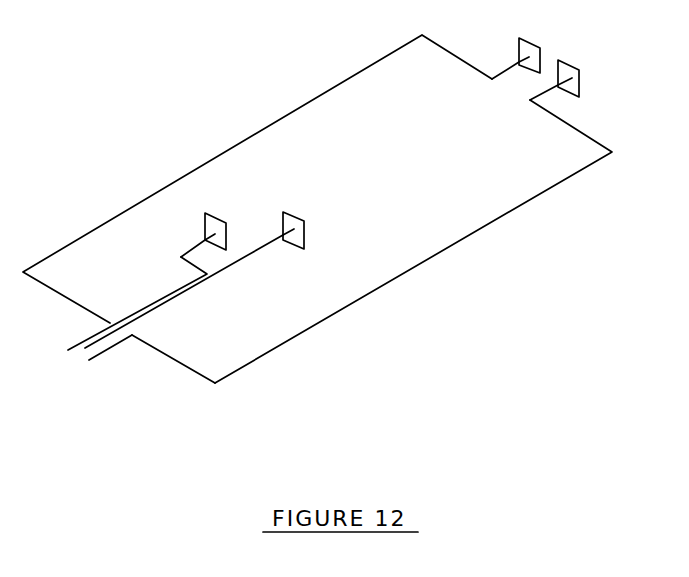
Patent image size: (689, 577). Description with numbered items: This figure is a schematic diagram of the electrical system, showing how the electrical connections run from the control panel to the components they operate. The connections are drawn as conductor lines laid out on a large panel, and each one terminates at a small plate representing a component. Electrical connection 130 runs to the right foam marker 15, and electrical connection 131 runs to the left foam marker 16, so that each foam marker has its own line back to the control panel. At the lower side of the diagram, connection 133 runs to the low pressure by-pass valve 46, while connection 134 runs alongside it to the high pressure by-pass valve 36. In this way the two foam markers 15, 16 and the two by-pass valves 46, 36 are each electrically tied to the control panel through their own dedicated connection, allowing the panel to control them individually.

The electrical connection 130 is at (339, 84).
The electrical connection 131 is at (366, 297).
The right foam marker 15 is at (533, 35).
The left foam marker 16 is at (580, 63).
The low pressure by-pass valve 46 is at (214, 211).
The high pressure by-pass valve 36 is at (299, 216).
The connection 133 is at (175, 292).
The connection 134 is at (182, 305).